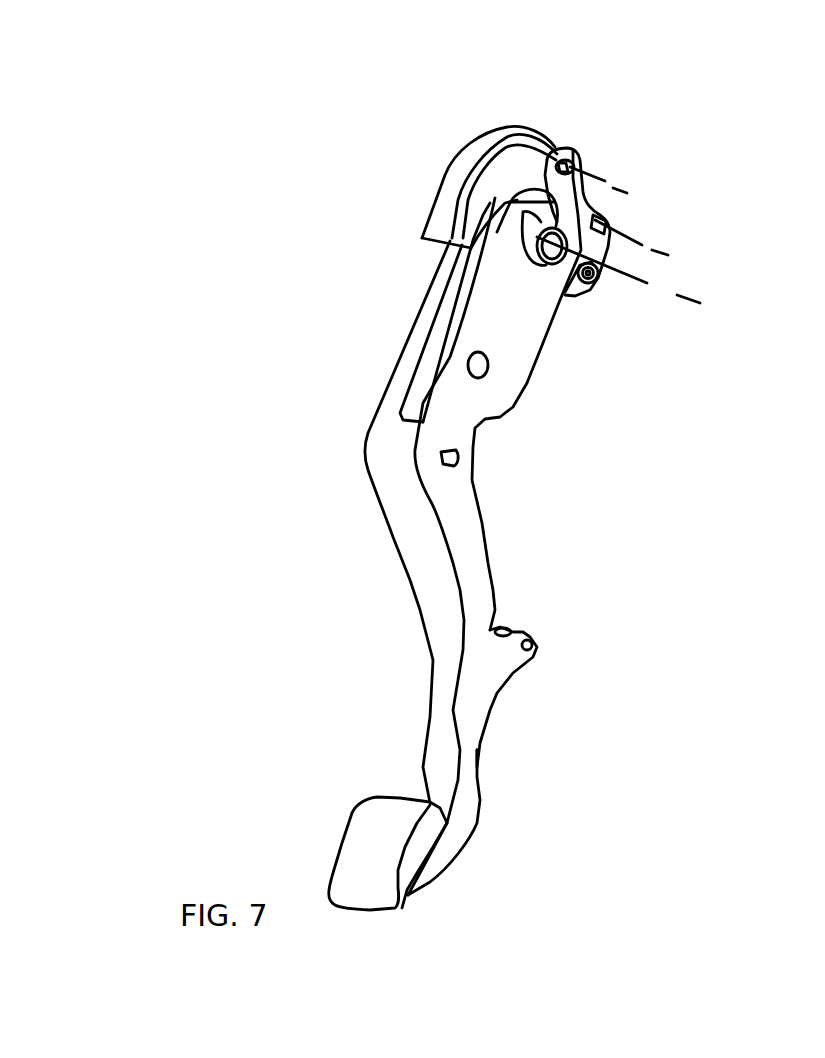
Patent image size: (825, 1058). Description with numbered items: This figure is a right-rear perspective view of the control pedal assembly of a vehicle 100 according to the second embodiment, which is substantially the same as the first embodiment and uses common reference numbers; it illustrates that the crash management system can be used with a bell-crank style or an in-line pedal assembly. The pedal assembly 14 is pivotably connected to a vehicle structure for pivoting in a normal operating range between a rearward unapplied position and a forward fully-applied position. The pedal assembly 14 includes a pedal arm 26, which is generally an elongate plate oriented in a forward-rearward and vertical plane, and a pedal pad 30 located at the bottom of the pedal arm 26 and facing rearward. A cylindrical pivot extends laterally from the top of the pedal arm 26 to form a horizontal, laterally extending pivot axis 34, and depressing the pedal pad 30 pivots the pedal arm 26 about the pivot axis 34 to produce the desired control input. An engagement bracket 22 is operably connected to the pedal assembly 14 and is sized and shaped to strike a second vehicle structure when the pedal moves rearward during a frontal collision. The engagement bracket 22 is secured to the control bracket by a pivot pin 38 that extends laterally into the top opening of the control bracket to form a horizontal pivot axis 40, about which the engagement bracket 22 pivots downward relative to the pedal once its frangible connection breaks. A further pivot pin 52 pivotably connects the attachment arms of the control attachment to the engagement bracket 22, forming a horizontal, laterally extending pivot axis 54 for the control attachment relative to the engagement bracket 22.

The vehicle 100 is at (614, 494).
The pedal assembly 14 is at (495, 577).
The pedal arm 26 is at (483, 528).
The pedal pad 30 is at (352, 816).
The engagement bracket 22 is at (446, 184).
The pivot axis 34 is at (652, 283).
The pivot pin 38 is at (607, 207).
The pivot pin 52 is at (575, 152).
The pivot axis 54 is at (603, 173).
The pivot axis 40 is at (633, 237).